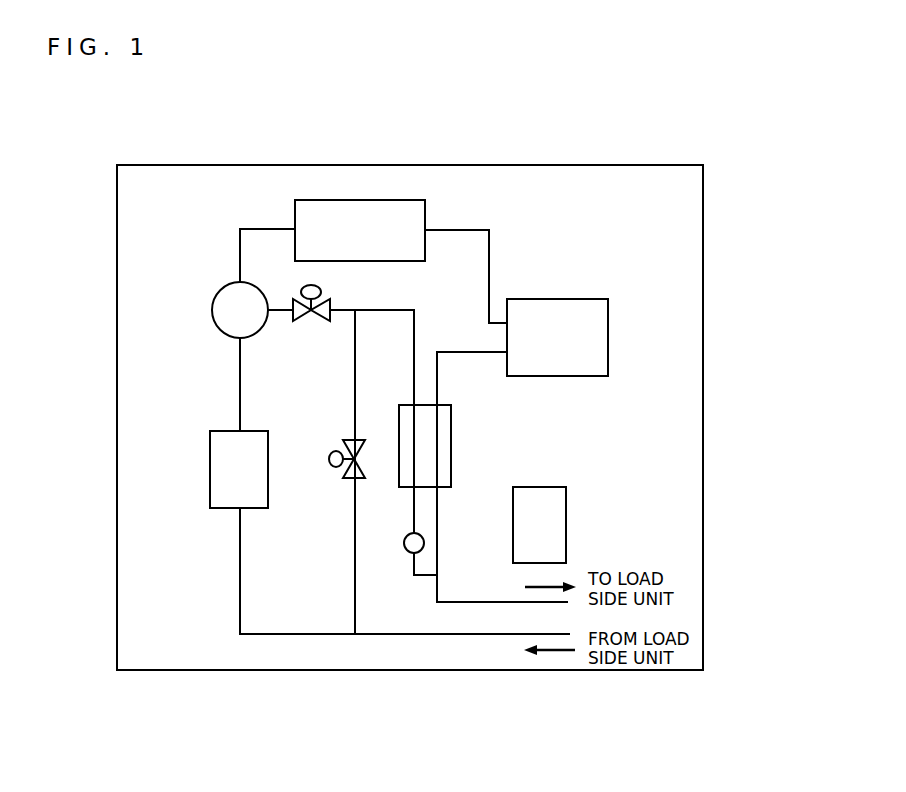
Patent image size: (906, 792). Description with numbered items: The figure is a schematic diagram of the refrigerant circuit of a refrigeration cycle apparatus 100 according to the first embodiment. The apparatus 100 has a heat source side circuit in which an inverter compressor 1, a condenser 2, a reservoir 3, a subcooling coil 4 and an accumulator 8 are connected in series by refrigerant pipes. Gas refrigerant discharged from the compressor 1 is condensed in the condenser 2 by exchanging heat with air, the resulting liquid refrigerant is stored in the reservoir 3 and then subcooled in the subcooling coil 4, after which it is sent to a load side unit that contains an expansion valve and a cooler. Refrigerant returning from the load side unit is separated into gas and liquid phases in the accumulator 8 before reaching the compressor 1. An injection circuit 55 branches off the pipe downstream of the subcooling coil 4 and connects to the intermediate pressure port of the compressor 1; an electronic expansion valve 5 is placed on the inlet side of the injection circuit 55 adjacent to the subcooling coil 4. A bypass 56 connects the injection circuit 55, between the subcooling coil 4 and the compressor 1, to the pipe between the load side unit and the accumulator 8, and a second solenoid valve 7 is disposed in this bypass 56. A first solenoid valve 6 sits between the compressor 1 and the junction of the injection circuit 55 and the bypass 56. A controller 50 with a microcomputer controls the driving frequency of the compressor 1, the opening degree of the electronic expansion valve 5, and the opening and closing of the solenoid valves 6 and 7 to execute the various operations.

The refrigeration cycle apparatus 100 is at (703, 200).
The inverter compressor 1 is at (212, 310).
The condenser 2 is at (295, 210).
The reservoir 3 is at (577, 376).
The subcooling coil 4 is at (451, 443).
The electronic expansion valve 5 is at (404, 543).
The first solenoid valve 6 is at (311, 320).
The second solenoid valve 7 is at (329, 463).
The accumulator 8 is at (210, 475).
The controller 50 is at (566, 512).
The injection circuit 55 is at (418, 323).
The bypass 56 is at (353, 359).